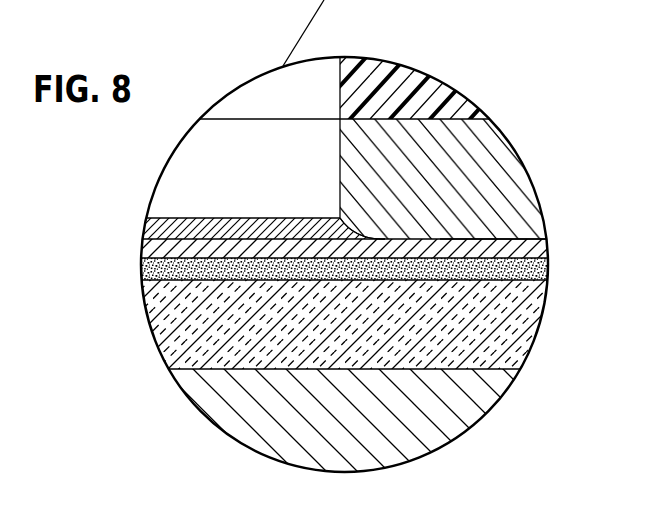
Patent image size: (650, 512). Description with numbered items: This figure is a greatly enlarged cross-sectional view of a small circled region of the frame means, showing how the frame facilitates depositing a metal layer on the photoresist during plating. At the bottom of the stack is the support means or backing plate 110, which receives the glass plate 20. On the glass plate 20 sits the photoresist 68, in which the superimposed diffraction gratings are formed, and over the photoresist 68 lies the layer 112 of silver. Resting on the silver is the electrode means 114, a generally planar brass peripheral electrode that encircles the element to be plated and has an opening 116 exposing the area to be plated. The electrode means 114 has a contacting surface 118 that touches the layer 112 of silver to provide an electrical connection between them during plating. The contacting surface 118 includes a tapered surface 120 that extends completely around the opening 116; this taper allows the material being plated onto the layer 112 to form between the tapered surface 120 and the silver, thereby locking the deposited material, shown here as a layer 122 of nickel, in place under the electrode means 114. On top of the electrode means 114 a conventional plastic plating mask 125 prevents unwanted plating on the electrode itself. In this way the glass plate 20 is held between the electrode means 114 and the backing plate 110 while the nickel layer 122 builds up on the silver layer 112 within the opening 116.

The plastic plating mask 125 is at (428, 92).
The electrode means 114 is at (500, 155).
The opening 116 is at (340, 140).
The tapered surface 120 is at (345, 210).
The layer of nickel 122 is at (167, 226).
The layer of silver 112 is at (148, 250).
The contacting surface 118 is at (495, 238).
The photoresist 68 is at (146, 264).
The glass plate 20 is at (161, 328).
The backing plate 110 is at (198, 387).